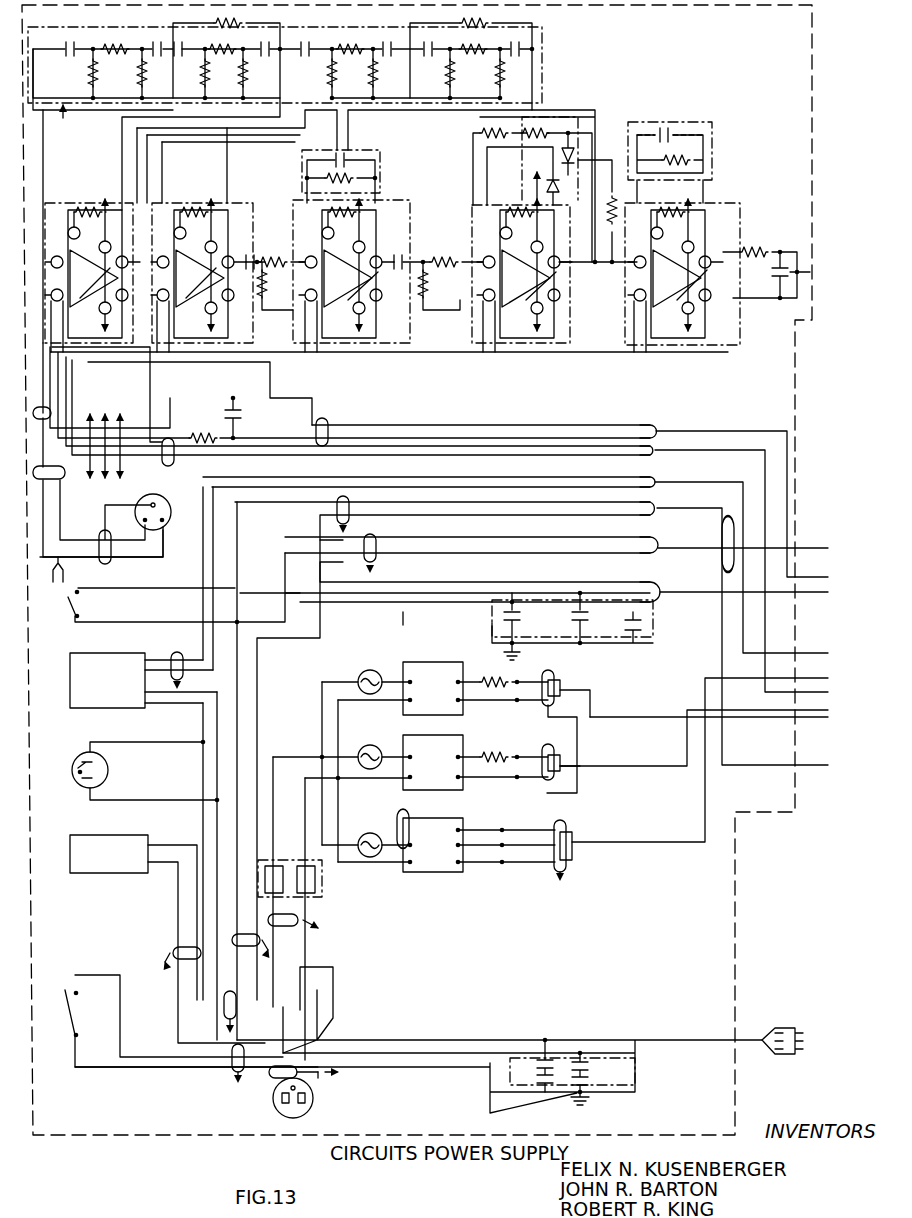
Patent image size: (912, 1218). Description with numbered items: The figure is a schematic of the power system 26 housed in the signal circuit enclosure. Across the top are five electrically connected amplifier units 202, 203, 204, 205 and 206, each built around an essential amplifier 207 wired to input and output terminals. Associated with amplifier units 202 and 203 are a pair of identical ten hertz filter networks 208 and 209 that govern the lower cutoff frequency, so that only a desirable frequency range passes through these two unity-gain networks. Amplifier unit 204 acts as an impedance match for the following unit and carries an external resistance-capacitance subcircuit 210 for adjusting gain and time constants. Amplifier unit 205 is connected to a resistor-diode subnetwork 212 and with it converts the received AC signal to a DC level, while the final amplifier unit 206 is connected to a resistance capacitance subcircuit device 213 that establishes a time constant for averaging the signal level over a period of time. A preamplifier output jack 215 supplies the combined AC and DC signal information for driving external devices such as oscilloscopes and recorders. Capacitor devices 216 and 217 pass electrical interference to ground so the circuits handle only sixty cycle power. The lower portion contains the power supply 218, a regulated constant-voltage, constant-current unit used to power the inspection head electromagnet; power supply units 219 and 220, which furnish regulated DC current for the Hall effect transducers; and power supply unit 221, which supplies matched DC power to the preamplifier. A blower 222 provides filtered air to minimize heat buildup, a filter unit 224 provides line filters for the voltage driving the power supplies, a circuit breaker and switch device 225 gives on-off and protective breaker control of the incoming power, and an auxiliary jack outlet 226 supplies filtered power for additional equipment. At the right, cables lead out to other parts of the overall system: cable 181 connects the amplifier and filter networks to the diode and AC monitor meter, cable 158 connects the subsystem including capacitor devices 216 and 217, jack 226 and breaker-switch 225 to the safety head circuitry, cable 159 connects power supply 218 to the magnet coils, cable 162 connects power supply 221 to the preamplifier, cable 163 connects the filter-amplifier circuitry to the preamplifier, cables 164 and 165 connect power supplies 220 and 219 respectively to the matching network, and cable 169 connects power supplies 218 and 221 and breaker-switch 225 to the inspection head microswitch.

The power system 26 is at (757, 935).
The cable 158 is at (762, 549).
The cable 159 is at (761, 573).
The cable 162 is at (719, 754).
The cable 163 is at (761, 577).
The cable 164 is at (713, 734).
The cable 165 is at (814, 717).
The cable 169 is at (762, 642).
The cable 181 is at (818, 276).
The amplifier unit 202 is at (66, 195).
The amplifier unit 203 is at (177, 197).
The amplifier unit 204 is at (286, 195).
The amplifier unit 205 is at (469, 217).
The amplifier unit 206 is at (719, 206).
The amplifier 207 is at (85, 300).
The filter network 208 is at (66, 122).
The filter network 209 is at (543, 78).
The resistance-capacitance subcircuit 210 is at (346, 150).
The resistor-diode subnetwork 212 is at (580, 112).
The resistance capacitance subcircuit device 213 is at (654, 118).
The preamplifier output jack 215 is at (172, 490).
The capacitor device 216 is at (490, 620).
The capacitor device 217 is at (612, 1062).
The power supply 218 is at (139, 652).
The power supply unit 219 is at (410, 664).
The power supply unit 220 is at (458, 748).
The power supply unit 221 is at (447, 874).
The blower 222 is at (132, 862).
The filter unit 224 is at (325, 895).
The circuit breaker and switch device 225 is at (107, 962).
The auxiliary jack outlet 226 is at (316, 1105).